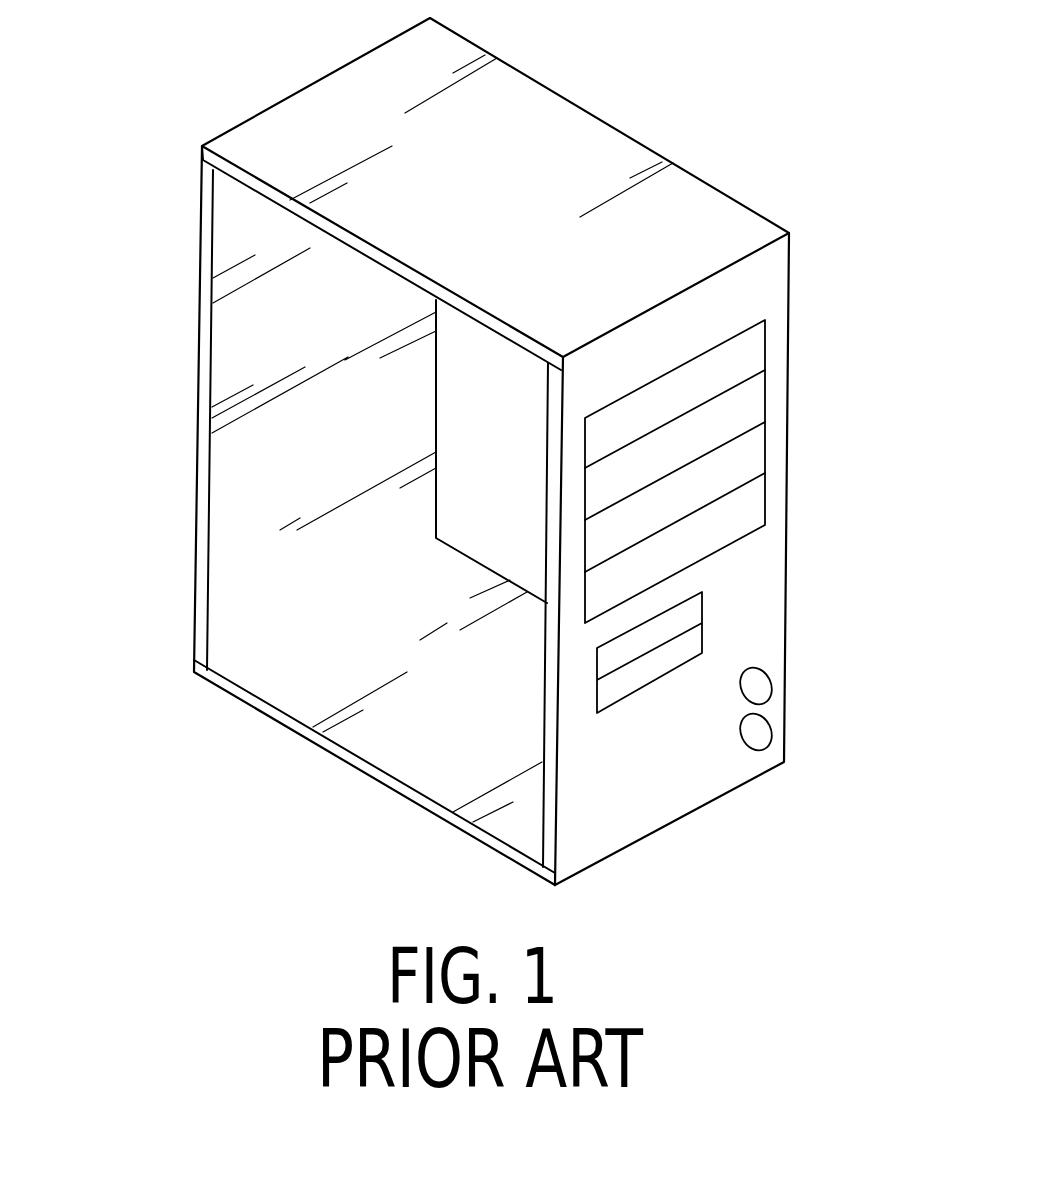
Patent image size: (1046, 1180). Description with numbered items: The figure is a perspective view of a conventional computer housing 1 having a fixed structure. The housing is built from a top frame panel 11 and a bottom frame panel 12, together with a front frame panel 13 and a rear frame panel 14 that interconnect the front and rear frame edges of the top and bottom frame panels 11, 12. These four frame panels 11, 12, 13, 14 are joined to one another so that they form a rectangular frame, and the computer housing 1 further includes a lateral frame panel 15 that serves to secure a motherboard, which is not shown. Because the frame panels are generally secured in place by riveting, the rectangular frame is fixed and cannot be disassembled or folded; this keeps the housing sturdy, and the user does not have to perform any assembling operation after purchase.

The computer housing 1 is at (822, 163).
The top frame panel 11 is at (555, 138).
The bottom frame panel 12 is at (365, 763).
The front frame panel 13 is at (732, 632).
The rear frame panel 14 is at (272, 462).
The lateral frame panel 15 is at (475, 395).